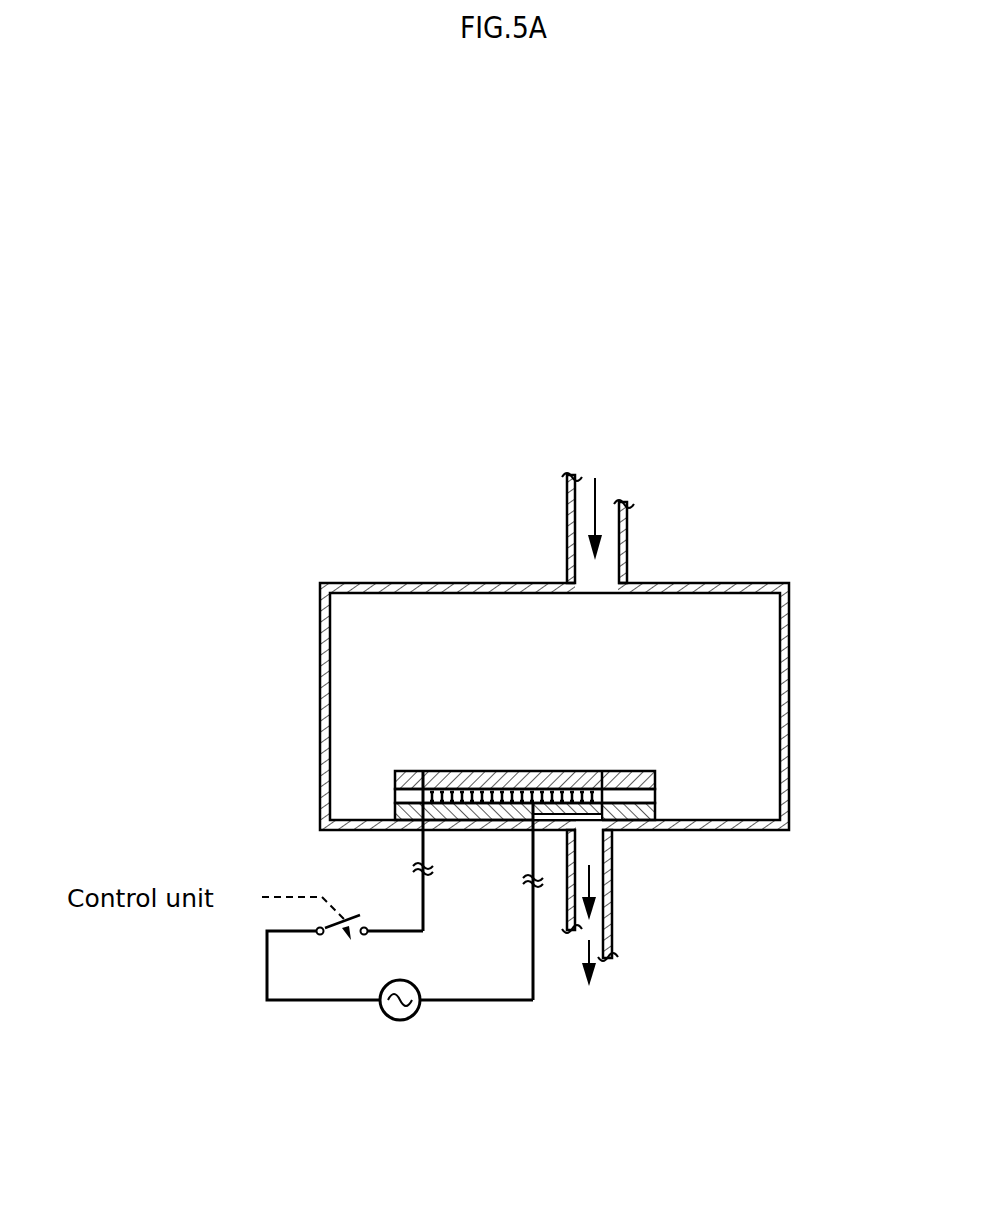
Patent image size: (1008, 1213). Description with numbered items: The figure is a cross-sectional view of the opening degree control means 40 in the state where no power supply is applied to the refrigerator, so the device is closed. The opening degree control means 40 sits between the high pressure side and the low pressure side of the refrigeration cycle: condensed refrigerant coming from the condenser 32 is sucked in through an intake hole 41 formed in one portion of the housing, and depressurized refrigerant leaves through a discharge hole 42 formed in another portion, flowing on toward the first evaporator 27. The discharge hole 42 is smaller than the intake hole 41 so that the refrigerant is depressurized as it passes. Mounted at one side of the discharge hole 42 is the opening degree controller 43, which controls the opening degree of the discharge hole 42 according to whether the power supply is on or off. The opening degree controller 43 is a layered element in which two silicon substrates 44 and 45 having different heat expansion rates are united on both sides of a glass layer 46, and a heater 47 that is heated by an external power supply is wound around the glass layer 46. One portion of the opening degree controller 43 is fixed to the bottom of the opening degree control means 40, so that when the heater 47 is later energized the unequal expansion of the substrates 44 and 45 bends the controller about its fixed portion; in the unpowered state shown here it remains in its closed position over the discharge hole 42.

The first evaporator 27 is at (591, 947).
The condenser 32 is at (596, 497).
The opening degree control means 40 is at (790, 604).
The intake hole 41 is at (607, 590).
The discharge hole 42 is at (578, 820).
The opening degree controller 43 is at (493, 851).
The silicon substrate 44 is at (423, 771).
The silicon substrate 45 is at (657, 810).
The glass layer 46 is at (625, 796).
The heater 47 is at (605, 790).